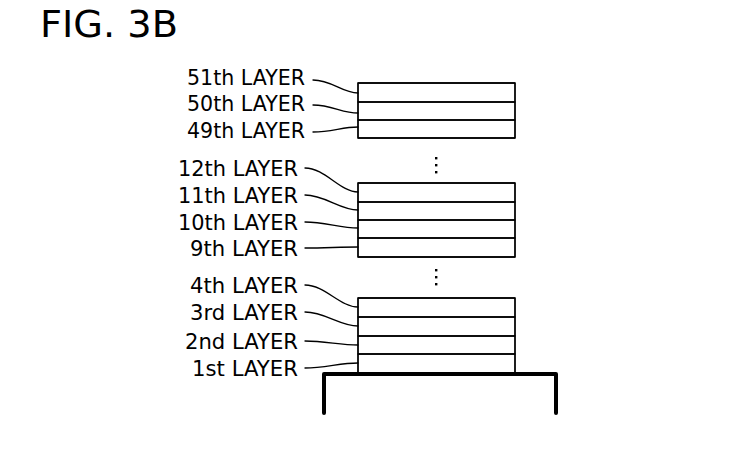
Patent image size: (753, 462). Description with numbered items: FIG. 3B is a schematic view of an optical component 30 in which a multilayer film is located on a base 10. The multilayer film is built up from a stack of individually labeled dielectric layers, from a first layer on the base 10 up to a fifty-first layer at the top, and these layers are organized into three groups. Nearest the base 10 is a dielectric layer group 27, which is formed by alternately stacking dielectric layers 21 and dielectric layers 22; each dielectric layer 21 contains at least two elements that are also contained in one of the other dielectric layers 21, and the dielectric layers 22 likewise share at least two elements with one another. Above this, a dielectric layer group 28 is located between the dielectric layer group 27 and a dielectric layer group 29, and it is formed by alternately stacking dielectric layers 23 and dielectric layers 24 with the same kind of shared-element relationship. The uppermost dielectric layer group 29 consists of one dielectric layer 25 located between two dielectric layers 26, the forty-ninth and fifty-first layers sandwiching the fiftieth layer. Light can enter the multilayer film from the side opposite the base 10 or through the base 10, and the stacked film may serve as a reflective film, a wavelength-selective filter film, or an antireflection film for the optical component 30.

The base 10 is at (558, 398).
The dielectric layer 21 is at (515, 326).
The dielectric layer 22 is at (515, 307).
The dielectric layer 23 is at (515, 210).
The dielectric layer 24 is at (515, 192).
The dielectric layer 25 is at (515, 110).
The dielectric layer 26 is at (515, 92).
The dielectric layer group 27 is at (598, 275).
The dielectric layer group 28 is at (598, 160).
The dielectric layer group 29 is at (598, 65).
The optical component 30 is at (146, 113).